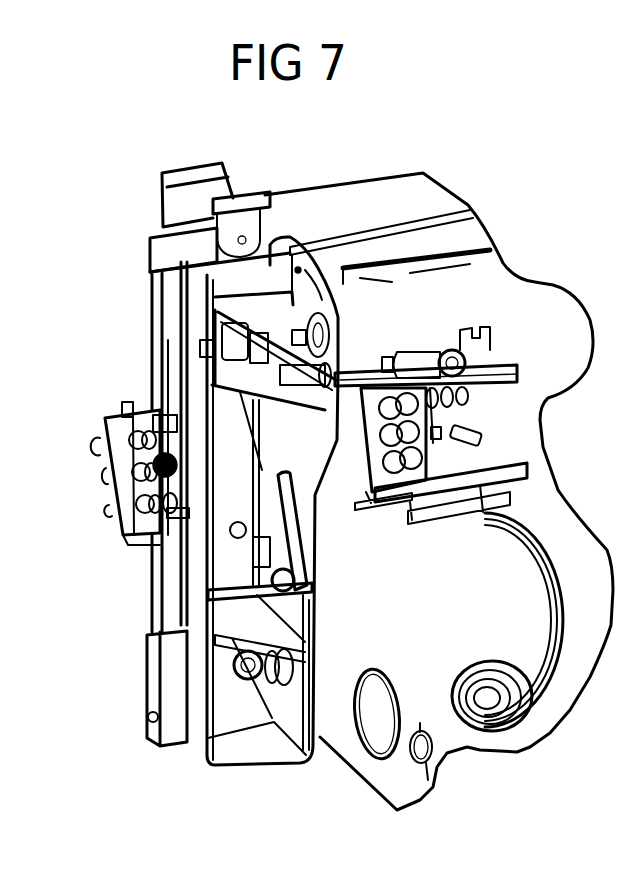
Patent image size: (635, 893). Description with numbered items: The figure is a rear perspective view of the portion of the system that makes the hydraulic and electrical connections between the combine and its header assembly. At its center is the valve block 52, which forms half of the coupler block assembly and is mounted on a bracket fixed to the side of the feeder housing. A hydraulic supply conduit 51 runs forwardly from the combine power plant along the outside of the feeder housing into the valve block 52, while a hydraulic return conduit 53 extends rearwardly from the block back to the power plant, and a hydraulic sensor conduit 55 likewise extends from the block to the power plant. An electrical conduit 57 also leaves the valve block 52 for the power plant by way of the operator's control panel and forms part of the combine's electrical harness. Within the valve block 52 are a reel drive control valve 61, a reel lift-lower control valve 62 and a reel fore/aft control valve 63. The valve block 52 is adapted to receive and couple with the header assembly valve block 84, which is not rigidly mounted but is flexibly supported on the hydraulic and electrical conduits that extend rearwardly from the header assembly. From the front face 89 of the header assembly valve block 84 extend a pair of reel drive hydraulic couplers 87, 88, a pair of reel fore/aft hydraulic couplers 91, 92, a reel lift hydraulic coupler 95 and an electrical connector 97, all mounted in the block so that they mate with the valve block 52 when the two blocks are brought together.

The hydraulic supply conduit 51 is at (415, 352).
The valve block 52 is at (433, 470).
The hydraulic return conduit 53 is at (490, 337).
The hydraulic sensor conduit 55 is at (437, 437).
The electrical conduit 57 is at (487, 432).
The reel drive control valve 61 is at (378, 355).
The reel lift-lower control valve 62 is at (367, 455).
The reel fore/aft control valve 63 is at (395, 473).
The header assembly valve block 84 is at (127, 470).
The reel drive hydraulic coupler 87 is at (145, 358).
The reel drive hydraulic coupler 88 is at (132, 446).
The front face 89 is at (134, 405).
The reel fore/aft hydraulic coupler 91 is at (178, 472).
The reel fore/aft hydraulic coupler 92 is at (150, 557).
The reel lift hydraulic coupler 95 is at (121, 510).
The electrical connector 97 is at (147, 693).